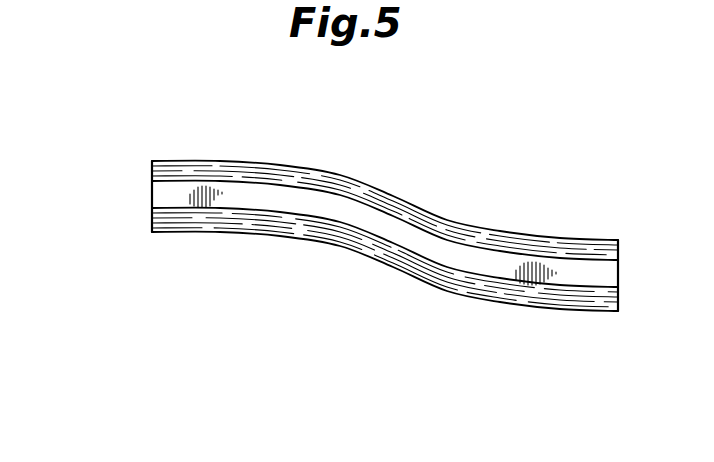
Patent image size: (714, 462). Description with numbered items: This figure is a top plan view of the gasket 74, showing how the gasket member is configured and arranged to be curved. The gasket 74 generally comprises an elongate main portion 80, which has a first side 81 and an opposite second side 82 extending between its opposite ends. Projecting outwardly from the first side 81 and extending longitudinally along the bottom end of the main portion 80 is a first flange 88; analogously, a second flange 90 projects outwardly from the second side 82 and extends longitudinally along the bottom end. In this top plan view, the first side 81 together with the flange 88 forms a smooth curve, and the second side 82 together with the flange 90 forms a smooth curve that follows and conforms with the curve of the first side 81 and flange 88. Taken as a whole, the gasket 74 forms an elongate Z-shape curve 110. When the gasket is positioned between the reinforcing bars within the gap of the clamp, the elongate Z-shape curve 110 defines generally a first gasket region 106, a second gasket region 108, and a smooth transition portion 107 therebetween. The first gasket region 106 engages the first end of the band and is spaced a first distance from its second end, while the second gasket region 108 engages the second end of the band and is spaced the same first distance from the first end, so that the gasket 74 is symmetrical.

The gasket 74 is at (155, 145).
The main portion 80 is at (158, 196).
The first side 81 is at (203, 208).
The second side 82 is at (190, 182).
The first flange 88 is at (283, 235).
The second flange 90 is at (333, 172).
The first gasket region 106 is at (258, 162).
The smooth transition portion 107 is at (372, 248).
The second gasket region 108 is at (577, 311).
The elongate Z-shape curve 110 is at (559, 227).